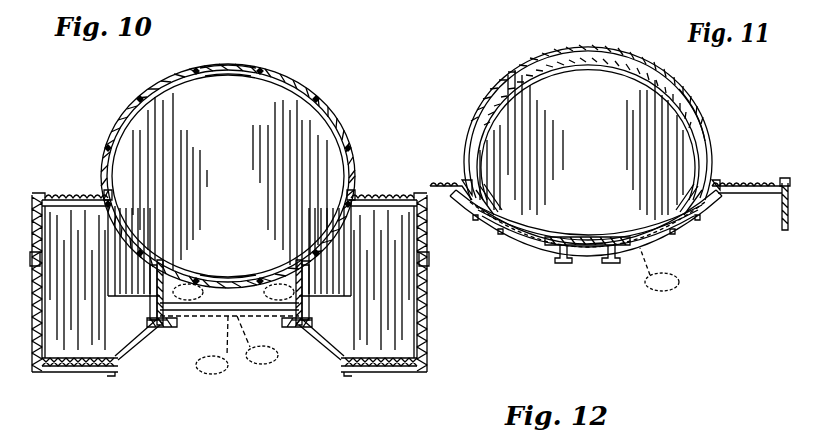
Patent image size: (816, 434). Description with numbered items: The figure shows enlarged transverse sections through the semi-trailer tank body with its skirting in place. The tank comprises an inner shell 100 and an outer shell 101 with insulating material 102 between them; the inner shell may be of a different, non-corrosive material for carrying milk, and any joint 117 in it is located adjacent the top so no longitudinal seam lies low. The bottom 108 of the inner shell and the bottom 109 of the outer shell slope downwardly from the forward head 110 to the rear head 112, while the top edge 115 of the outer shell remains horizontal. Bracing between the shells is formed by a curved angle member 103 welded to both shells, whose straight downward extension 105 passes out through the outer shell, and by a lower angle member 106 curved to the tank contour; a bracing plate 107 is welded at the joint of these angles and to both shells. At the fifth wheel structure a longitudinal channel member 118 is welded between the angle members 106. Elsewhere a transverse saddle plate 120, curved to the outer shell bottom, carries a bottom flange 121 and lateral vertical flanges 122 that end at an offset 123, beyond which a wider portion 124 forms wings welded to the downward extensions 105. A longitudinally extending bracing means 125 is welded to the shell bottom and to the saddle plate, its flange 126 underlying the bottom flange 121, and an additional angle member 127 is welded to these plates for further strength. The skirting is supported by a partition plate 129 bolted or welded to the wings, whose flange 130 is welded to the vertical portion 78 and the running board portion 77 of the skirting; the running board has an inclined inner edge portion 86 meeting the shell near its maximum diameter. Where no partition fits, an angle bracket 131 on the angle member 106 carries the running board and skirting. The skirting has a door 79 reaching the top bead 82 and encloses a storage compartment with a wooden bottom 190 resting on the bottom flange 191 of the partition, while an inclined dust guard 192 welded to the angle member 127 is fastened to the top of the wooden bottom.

In FIG. 10, the running board 77 is at (78, 193).
In FIG. 11, the running board 77 is at (448, 182).
In FIG. 11, the vertical portion of skirting 78 is at (783, 210).
In FIG. 10, the door 79 is at (37, 312).
In FIG. 10, the top bead 82 is at (36, 197).
In FIG. 11, the top bead 82 is at (786, 183).
In FIG. 10, the inclined inner edge portion 86 is at (108, 192).
In FIG. 11, the inclined inner edge portion 86 is at (463, 182).
In FIG. 10, the inner shell 100 is at (147, 110).
In FIG. 11, the inner shell 100 is at (498, 106).
In FIG. 10, the outer shell 101 is at (319, 98).
In FIG. 11, the outer shell 101 is at (539, 44).
In FIG. 10, the insulating material 102 is at (147, 94).
In FIG. 11, the insulating material 102 is at (600, 238).
In FIG. 10, the angle member 103 is at (105, 210).
In FIG. 11, the angle member 103 is at (695, 100).
In FIG. 10, the downward extension 105 is at (118, 272).
In FIG. 11, the angle member 106 is at (540, 250).
In FIG. 11, the bracing plate 107 is at (487, 195).
In FIG. 10, the bottom of inner shell 108 is at (226, 275).
In FIG. 11, the bottom of inner shell 108 is at (578, 237).
In FIG. 10, the bottom of outer shell 109 is at (226, 283).
In FIG. 11, the bottom of outer shell 109 is at (659, 269).
In FIG. 11, the forward head 110 is at (520, 80).
In FIG. 10, the rear head 112 is at (165, 135).
In FIG. 10, the top edge of outer shell 115 is at (232, 66).
In FIG. 11, the top edge of outer shell 115 is at (594, 46).
In FIG. 10, the joint 117 is at (231, 78).
In FIG. 11, the joint 117 is at (590, 62).
In FIG. 11, the channel member 118 is at (582, 247).
In FIG. 10, the saddle plate 120 is at (203, 312).
In FIG. 10, the bottom flange 121 is at (212, 345).
In FIG. 10, the lateral vertical flange 122 is at (233, 292).
In FIG. 10, the offset 123 is at (152, 312).
In FIG. 10, the wider portion 124 is at (150, 285).
In FIG. 10, the longitudinally extending bracing means 125 is at (163, 275).
In FIG. 10, the flange 126 is at (170, 328).
In FIG. 10, the angle member 127 is at (150, 338).
In FIG. 10, the partition plate 129 is at (78, 368).
In FIG. 10, the flange 130 is at (45, 262).
In FIG. 11, the angle bracket 131 is at (694, 226).
In FIG. 10, the wooden bottom 190 is at (63, 372).
In FIG. 10, the bottom flange 191 is at (55, 372).
In FIG. 10, the inclined dust guard 192 is at (132, 348).